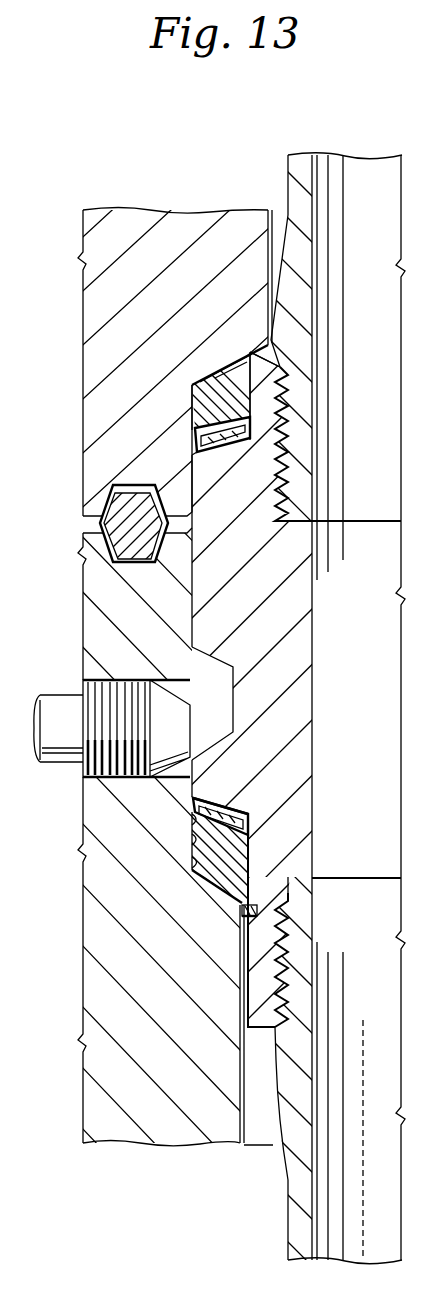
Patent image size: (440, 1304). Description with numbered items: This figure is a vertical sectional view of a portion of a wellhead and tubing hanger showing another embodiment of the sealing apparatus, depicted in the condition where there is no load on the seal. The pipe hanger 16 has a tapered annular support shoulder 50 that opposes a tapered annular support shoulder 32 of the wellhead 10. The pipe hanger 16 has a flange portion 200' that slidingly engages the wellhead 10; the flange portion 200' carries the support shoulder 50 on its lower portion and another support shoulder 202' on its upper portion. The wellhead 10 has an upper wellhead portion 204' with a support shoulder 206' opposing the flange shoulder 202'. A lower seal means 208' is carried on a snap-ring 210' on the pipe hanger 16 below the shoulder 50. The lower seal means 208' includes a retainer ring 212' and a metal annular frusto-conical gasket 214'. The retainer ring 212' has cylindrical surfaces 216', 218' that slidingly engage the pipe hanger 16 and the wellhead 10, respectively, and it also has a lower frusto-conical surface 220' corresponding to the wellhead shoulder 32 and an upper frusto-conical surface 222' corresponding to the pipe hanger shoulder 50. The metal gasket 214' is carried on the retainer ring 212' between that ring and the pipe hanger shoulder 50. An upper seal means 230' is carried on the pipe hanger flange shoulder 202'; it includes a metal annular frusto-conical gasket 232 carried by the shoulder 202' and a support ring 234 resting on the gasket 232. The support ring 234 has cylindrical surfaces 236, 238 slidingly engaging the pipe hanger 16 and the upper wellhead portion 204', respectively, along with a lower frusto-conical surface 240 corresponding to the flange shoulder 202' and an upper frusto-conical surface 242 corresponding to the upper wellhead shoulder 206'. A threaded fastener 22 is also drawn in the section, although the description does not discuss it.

The wellhead 10 is at (124, 967).
The pipe hanger 16 is at (169, 807).
The set screw 22 is at (175, 718).
The tapered annular support shoulder 32 is at (213, 886).
The tapered annular support shoulder 50 is at (243, 813).
The flange portion 200' is at (220, 652).
The support shoulder 202' is at (220, 618).
The upper wellhead portion 204' is at (220, 372).
The support shoulder 206' is at (142, 360).
The lower seal means 208' is at (220, 971).
The snap-ring 210' is at (308, 912).
The retainer ring 212' is at (220, 851).
The metal annular frusto-conical gasket 214' is at (282, 809).
The cylindrical surface 216' is at (281, 867).
The cylindrical surface 218' is at (101, 839).
The lower frusto-conical surface 220' is at (106, 861).
The upper frusto-conical surface 222' is at (101, 817).
The upper seal means 230' is at (220, 422).
The metal annular frusto-conical gasket 232 is at (197, 437).
The support ring 234 is at (207, 380).
The cylindrical surface 236 is at (253, 357).
The cylindrical surface 238 is at (220, 388).
The lower frusto-conical surface 240 is at (240, 408).
The upper frusto-conical surface 242 is at (233, 372).